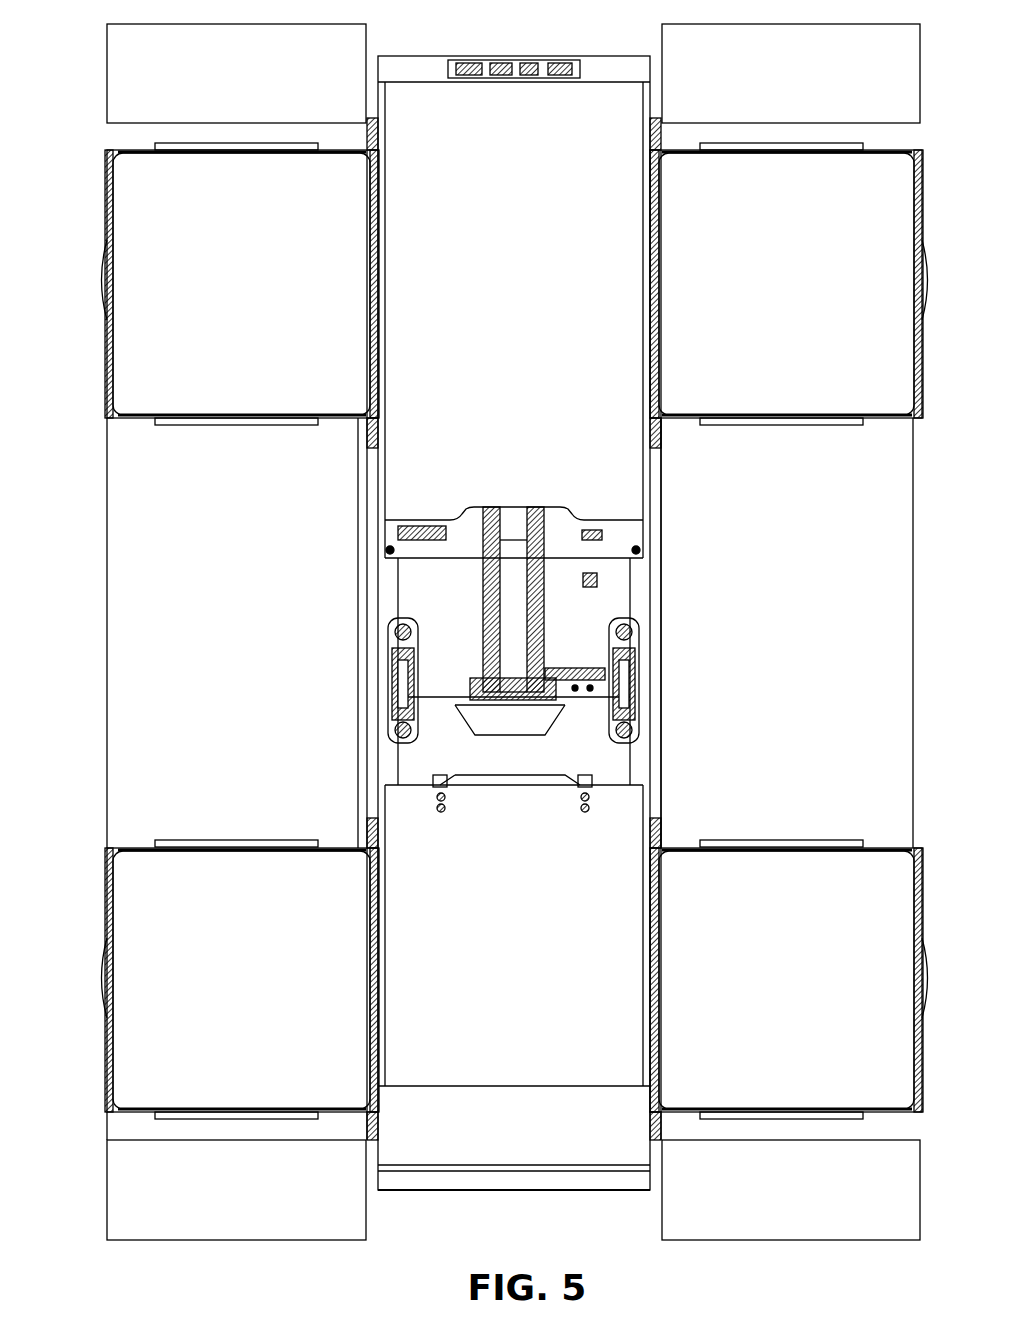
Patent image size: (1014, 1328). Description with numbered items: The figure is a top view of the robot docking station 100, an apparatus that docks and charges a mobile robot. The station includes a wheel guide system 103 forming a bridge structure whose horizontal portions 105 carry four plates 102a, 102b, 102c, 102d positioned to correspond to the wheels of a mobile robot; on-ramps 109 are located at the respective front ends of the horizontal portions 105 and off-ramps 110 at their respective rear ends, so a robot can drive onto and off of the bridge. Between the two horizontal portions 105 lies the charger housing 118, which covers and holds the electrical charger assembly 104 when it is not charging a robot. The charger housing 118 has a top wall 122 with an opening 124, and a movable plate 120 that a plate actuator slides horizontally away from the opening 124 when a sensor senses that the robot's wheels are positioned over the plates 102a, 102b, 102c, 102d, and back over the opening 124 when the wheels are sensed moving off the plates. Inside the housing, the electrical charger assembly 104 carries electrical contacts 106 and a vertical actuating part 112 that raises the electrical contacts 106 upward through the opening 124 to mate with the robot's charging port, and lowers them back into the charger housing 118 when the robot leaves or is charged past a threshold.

The robot docking station 100 is at (80, 68).
The plate 102a is at (211, 297).
The plate 102b is at (204, 997).
The plate 102c is at (773, 297).
The plate 102d is at (766, 997).
The wheel guide system 103 is at (218, 1244).
The electrical charger assembly 104 is at (322, 716).
The horizontal portions 105 is at (197, 642).
The electrical contacts 106 is at (403, 672).
The on-ramps 109 is at (217, 1204).
The off-ramps 110 is at (217, 84).
The vertical actuating part 112 is at (466, 592).
The charger housing 118 is at (431, 1197).
The movable plate 120 is at (504, 987).
The top wall 122 is at (497, 337).
The opening 124 is at (457, 750).